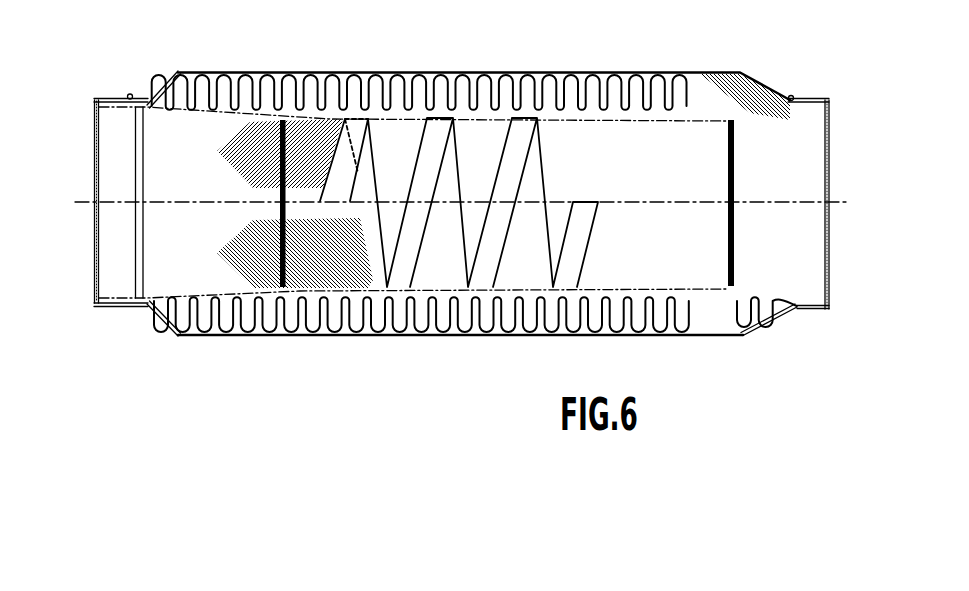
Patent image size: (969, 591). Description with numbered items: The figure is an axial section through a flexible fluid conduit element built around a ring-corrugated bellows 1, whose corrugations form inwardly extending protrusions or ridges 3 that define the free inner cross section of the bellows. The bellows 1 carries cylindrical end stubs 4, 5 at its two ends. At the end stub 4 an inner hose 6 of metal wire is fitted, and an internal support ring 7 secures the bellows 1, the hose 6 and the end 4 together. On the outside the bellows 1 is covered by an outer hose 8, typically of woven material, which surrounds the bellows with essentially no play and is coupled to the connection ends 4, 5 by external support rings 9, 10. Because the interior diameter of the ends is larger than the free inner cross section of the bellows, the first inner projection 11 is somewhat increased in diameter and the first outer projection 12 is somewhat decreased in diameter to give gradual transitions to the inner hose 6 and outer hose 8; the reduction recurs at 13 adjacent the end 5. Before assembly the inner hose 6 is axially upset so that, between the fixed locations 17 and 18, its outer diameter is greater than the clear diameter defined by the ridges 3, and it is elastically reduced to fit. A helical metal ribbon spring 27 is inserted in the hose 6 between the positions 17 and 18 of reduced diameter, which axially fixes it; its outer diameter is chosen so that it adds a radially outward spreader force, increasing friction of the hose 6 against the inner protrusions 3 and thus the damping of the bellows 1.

The ring-corrugated bellows 1 is at (415, 92).
The inner protrusions 3 is at (340, 110).
The cylindrical end stub 4 is at (97, 102).
The cylindrical end stub 5 is at (810, 300).
The inner hose 6 is at (180, 148).
The internal support ring 7 is at (115, 245).
The outer hose 8 is at (735, 73).
The external support ring 9 is at (114, 97).
The external support ring 10 is at (807, 98).
The first inner projection 11 is at (147, 103).
The first outer projection 12 is at (165, 318).
The decreased-diameter outer projection 13 is at (758, 318).
The fixed location of reduced hose diameter 17 is at (734, 240).
The fixed location of reduced hose diameter 18 is at (295, 268).
The helical metal ribbon spring 27 is at (517, 140).